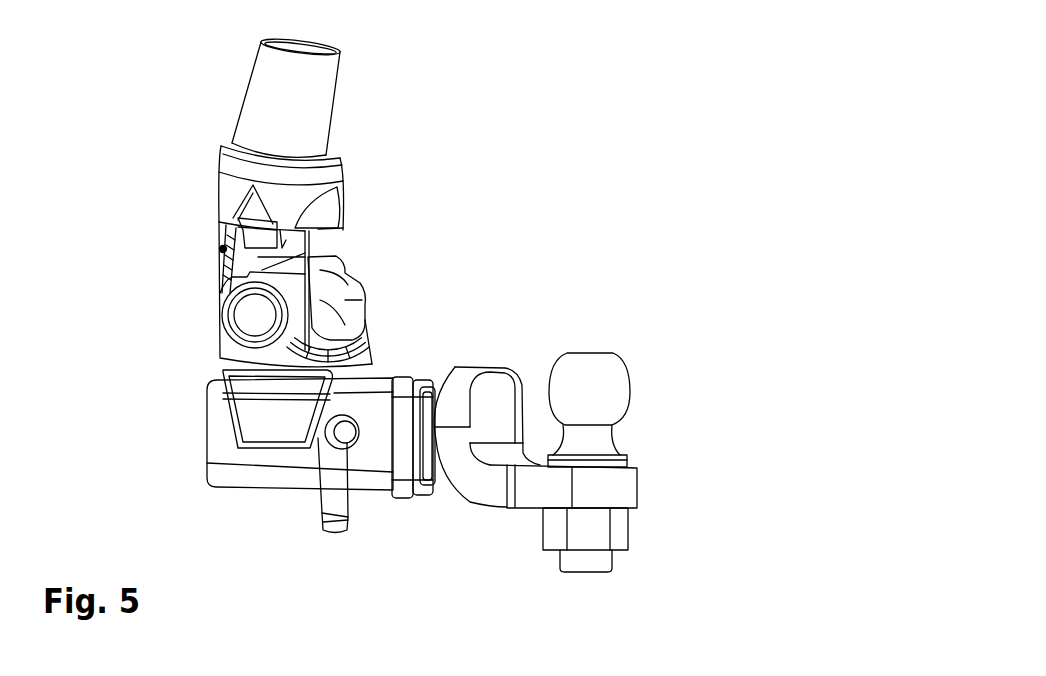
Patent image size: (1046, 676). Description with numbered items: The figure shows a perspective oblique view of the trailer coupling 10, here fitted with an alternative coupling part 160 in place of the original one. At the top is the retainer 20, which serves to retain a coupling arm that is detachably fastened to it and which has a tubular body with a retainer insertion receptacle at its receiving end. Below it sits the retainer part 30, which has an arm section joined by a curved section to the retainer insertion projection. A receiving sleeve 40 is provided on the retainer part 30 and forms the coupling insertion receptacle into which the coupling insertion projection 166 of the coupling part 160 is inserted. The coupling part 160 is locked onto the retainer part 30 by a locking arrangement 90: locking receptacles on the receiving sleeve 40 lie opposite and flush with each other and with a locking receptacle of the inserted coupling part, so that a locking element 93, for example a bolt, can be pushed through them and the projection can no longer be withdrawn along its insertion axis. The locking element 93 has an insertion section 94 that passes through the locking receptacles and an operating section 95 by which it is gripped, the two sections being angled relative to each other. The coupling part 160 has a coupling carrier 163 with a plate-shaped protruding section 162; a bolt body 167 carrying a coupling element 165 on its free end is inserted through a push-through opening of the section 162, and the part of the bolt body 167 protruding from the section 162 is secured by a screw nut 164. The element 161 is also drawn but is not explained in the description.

The trailer coupling 10 is at (748, 125).
The retainer 20 is at (345, 100).
The retainer part 30 is at (208, 248).
The receiving sleeve 40 is at (250, 494).
The locking arrangement 90 is at (346, 545).
The locking element 93 is at (326, 527).
The insertion section 94 is at (354, 422).
The operating section 95 is at (319, 512).
The coupling part 160 is at (645, 400).
The shackle 161 is at (436, 425).
The protruding section 162 is at (627, 485).
The coupling carrier 163 is at (478, 494).
The screw nut 164 is at (625, 537).
The coupling element 165 is at (612, 382).
The coupling insertion projection 166 is at (436, 425).
The bolt body 167 is at (607, 562).